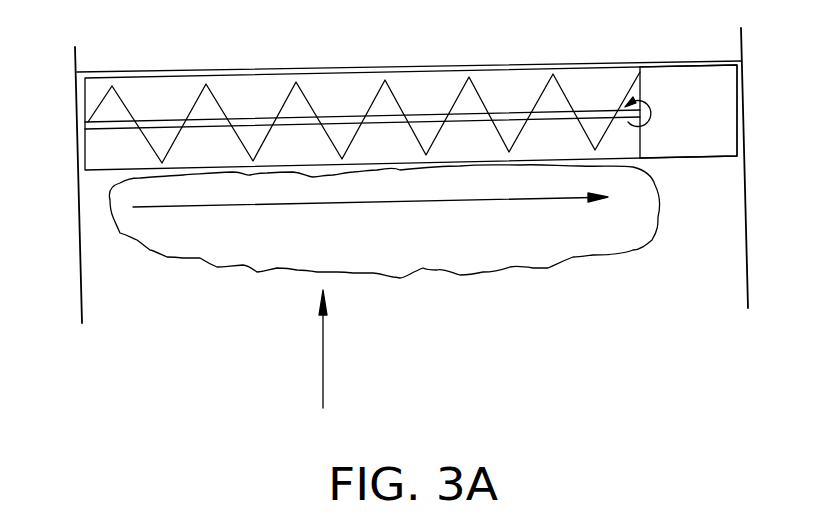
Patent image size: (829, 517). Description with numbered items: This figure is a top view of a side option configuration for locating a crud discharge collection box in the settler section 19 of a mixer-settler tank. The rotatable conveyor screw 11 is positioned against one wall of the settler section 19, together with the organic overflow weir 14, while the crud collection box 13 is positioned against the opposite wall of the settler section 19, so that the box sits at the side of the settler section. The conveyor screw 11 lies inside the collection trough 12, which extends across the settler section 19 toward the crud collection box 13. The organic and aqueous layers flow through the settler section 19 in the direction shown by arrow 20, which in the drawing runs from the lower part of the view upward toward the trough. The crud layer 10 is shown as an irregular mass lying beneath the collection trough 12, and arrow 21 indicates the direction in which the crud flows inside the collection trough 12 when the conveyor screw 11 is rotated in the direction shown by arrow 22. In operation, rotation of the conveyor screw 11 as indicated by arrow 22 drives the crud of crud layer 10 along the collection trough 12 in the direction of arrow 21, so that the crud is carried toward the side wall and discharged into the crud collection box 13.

The crud layer 10 is at (548, 268).
The rotatable conveyor screw 11 is at (122, 101).
The collection trough 12 is at (178, 72).
The crud collection box 13 is at (738, 85).
The organic overflow weir 14 is at (640, 66).
The settler section 19 is at (74, 107).
The arrow indicating flow direction of organic and aqueous layers 20 is at (325, 356).
The arrow indicating direction of crud flow 21 is at (470, 201).
The arrow indicating rotation of conveyor screw 22 is at (653, 118).